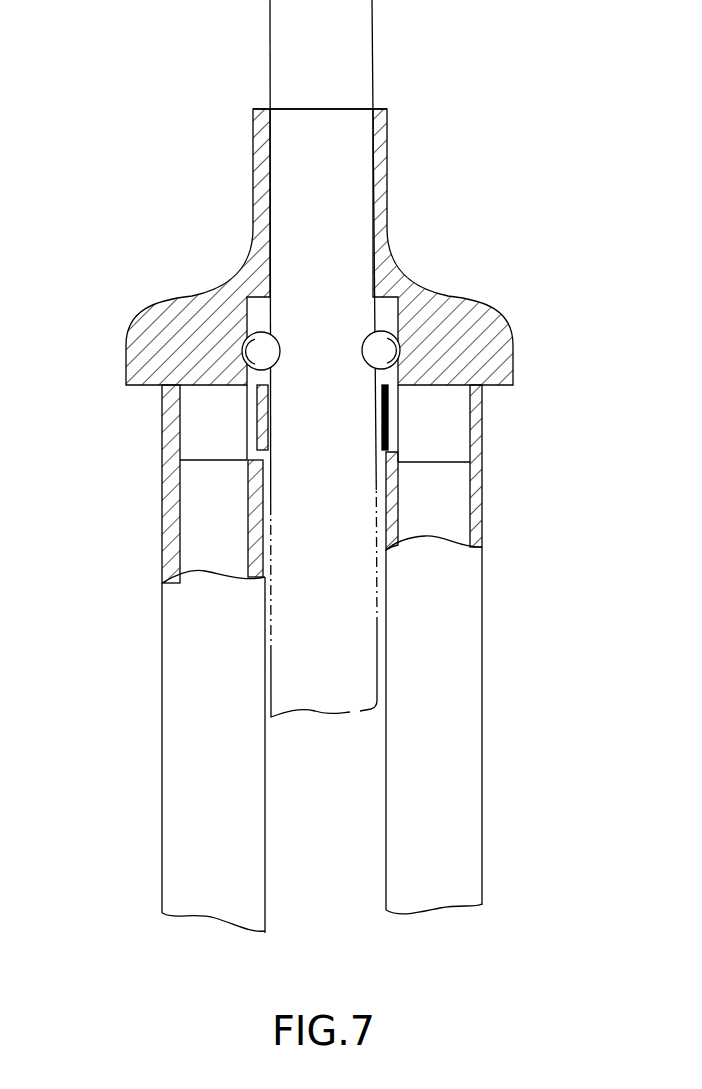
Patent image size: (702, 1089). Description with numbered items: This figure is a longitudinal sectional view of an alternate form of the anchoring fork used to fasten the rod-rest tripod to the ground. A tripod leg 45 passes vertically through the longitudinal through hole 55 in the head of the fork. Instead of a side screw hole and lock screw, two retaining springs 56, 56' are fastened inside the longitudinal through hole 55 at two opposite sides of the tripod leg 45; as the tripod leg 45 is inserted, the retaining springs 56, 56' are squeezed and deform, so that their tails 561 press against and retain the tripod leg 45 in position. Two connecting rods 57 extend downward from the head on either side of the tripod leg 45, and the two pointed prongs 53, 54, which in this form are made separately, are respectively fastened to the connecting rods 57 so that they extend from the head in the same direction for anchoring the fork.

The tripod leg 45 is at (362, 592).
The pointed prong 53 is at (463, 779).
The pointed prong 54 is at (176, 751).
The longitudinal through hole 55 is at (358, 207).
The retaining spring 56 is at (356, 304).
The retaining spring 56' is at (295, 348).
The tail 561 is at (265, 420).
The connecting rod 57 is at (217, 442).